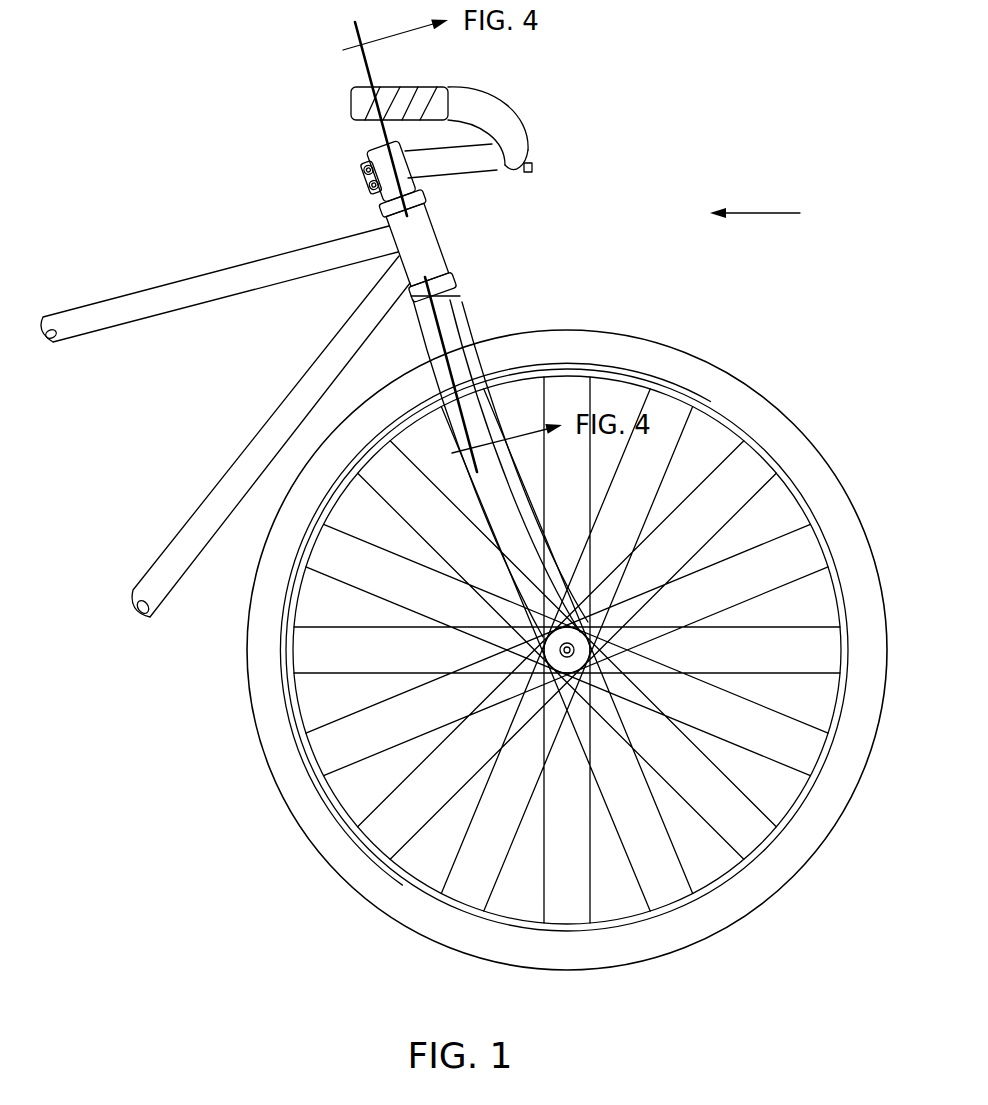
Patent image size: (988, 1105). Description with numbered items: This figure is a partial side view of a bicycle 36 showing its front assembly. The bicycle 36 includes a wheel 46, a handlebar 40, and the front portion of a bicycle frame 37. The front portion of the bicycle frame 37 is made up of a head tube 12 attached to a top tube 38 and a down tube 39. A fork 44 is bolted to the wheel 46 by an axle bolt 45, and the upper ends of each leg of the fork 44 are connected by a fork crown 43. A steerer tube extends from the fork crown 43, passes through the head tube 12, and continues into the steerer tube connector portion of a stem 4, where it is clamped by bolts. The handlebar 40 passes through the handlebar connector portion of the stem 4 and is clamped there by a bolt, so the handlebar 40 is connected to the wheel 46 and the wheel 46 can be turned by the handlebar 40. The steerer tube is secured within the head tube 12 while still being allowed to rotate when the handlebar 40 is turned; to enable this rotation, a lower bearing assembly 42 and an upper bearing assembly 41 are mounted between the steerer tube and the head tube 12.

The stem 4 is at (445, 160).
The head tube 12 is at (418, 242).
The bicycle 36 is at (777, 214).
The bicycle frame 37 is at (180, 277).
The top tube 38 is at (267, 272).
The down tube 39 is at (190, 540).
The handlebar 40 is at (483, 113).
The upper bearing assembly 41 is at (393, 208).
The lower bearing assembly 42 is at (440, 285).
The fork crown 43 is at (438, 297).
The fork 44 is at (468, 382).
The axle bolt 45 is at (548, 655).
The wheel 46 is at (330, 828).